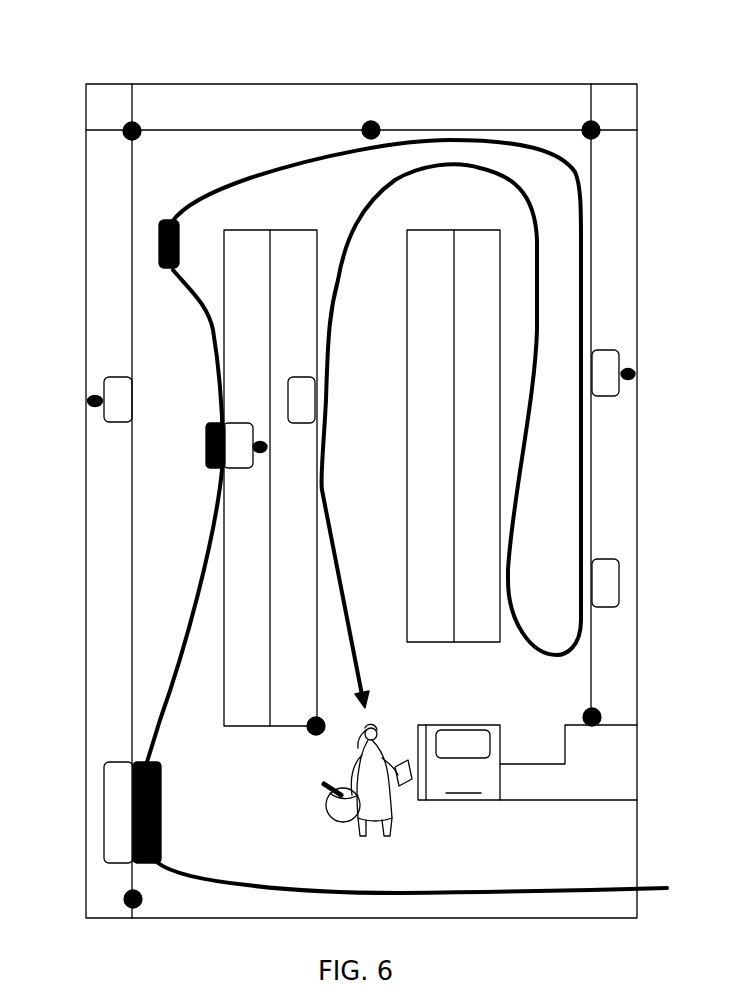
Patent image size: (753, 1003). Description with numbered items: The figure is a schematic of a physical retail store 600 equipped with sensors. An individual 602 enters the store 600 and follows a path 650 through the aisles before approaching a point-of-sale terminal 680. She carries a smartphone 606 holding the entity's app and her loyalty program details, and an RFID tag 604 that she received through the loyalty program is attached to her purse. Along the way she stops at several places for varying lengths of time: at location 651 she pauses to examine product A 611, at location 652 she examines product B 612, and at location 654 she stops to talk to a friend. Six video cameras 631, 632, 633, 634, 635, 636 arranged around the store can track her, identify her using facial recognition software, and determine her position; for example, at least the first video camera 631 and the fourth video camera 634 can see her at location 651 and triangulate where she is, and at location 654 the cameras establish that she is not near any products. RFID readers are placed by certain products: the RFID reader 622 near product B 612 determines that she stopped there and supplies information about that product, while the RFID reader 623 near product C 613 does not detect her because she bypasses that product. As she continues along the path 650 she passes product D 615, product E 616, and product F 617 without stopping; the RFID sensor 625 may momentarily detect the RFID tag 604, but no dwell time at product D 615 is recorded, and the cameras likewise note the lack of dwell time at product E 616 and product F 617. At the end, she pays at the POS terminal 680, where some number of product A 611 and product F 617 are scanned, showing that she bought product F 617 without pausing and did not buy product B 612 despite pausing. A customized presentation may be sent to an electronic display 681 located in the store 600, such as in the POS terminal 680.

The physical retail store 600 is at (394, 468).
The individual 602 is at (382, 800).
The RFID tag 604 is at (322, 790).
The smartphone 606 is at (402, 761).
The product A 611 is at (104, 797).
The product B 612 is at (234, 424).
The product C 613 is at (103, 415).
The product D 615 is at (612, 350).
The product E 616 is at (610, 560).
The product F 617 is at (298, 377).
The RFID reader 622 is at (266, 455).
The RFID reader 623 is at (92, 396).
The RFID sensor 625 is at (634, 380).
The first video camera 631 is at (128, 907).
The video camera 632 is at (139, 125).
The video camera 633 is at (380, 122).
The fourth video camera 634 is at (310, 733).
The video camera 635 is at (584, 122).
The video camera 636 is at (601, 712).
The path 650 is at (690, 862).
The location 651 is at (162, 790).
The location 652 is at (205, 452).
The location 654 is at (181, 241).
The point-of-sale terminal 680 is at (527, 762).
The electronic display 681 is at (459, 727).